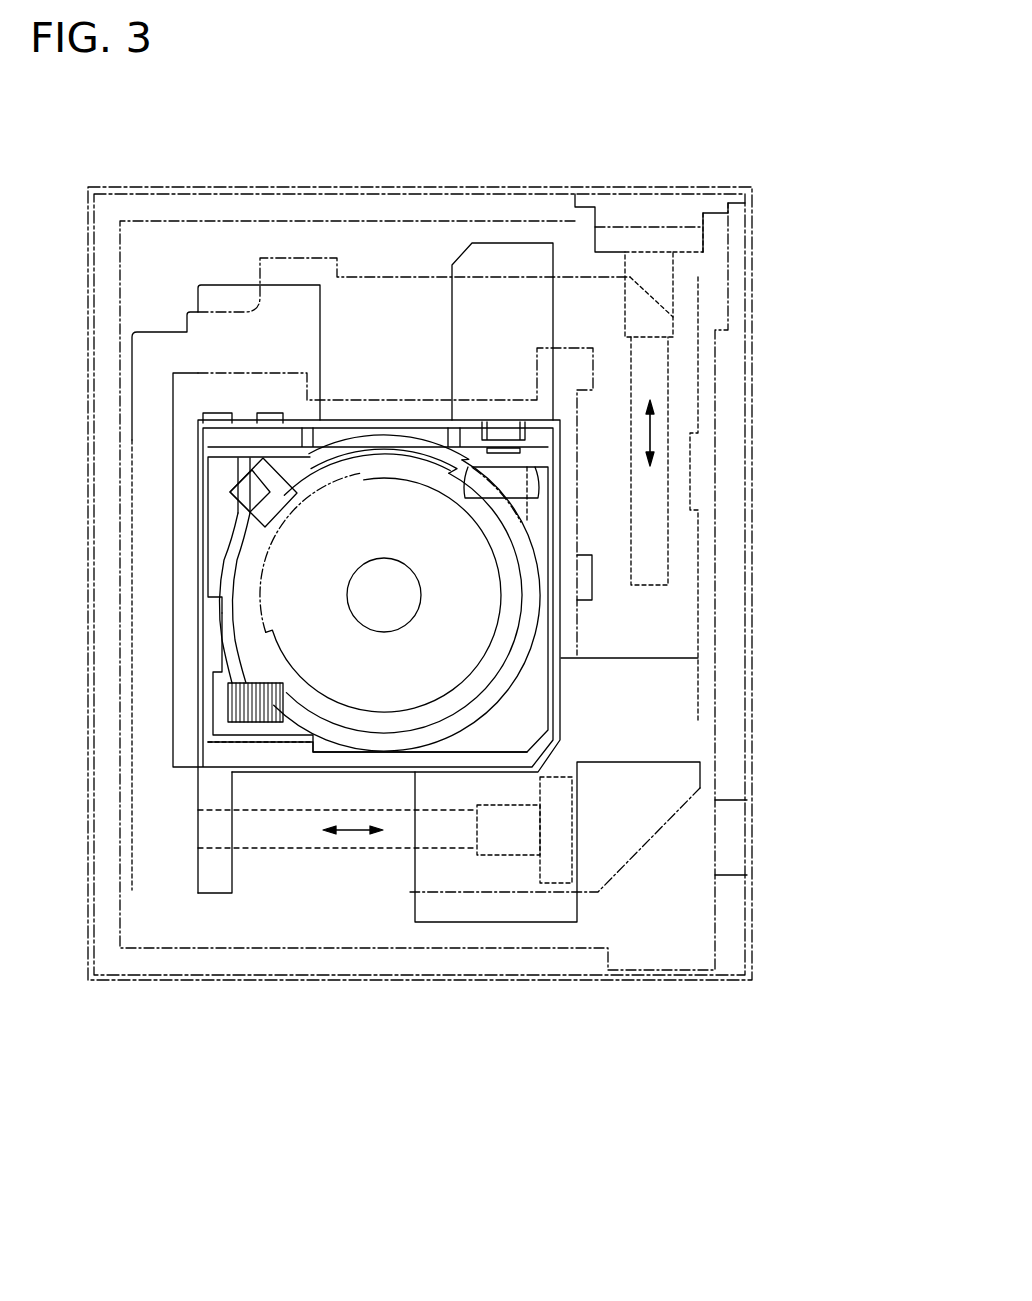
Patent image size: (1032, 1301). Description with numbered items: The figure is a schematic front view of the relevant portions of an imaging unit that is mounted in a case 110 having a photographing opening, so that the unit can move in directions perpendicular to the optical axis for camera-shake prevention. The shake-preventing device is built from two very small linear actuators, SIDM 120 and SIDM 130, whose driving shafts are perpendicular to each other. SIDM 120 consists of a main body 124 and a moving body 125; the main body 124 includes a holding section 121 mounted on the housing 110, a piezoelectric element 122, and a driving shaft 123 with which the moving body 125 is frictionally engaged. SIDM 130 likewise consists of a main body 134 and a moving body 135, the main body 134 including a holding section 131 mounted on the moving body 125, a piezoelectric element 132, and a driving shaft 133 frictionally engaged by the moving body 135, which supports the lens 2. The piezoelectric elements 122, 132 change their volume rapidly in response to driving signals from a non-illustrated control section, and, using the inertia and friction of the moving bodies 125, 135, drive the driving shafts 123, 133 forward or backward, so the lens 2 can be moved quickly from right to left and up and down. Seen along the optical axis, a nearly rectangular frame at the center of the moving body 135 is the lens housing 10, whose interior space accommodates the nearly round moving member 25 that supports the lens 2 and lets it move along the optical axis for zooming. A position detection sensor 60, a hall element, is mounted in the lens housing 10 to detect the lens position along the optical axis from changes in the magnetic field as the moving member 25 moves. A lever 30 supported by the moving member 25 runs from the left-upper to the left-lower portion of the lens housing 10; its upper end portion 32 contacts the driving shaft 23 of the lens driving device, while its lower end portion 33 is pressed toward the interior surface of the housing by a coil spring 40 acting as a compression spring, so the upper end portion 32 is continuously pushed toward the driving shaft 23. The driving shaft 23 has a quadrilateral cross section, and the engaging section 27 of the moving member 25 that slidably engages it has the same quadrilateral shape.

The lens 2 is at (545, 577).
The lens housing 10 is at (410, 597).
The driving shaft 23 is at (250, 495).
The moving member 25 is at (507, 628).
The engaging section 27 is at (255, 483).
The lever 30 is at (243, 647).
The upper end portion 32 is at (217, 492).
The lower end portion 33 is at (218, 712).
The coil spring 40 is at (245, 720).
The position detection sensor 60 is at (500, 440).
The case 110 is at (183, 188).
The SIDM 120 is at (879, 207).
The holding section 121 is at (687, 240).
The piezoelectric element 122 is at (665, 282).
The driving shaft 123 is at (663, 353).
The main body 124 is at (826, 147).
The moving body 125 is at (668, 458).
The SIDM 130 is at (495, 1112).
The holding section 131 is at (562, 863).
The piezoelectric element 132 is at (515, 842).
The driving shaft 133 is at (307, 842).
The main body 134 is at (550, 1067).
The moving body 135 is at (213, 885).